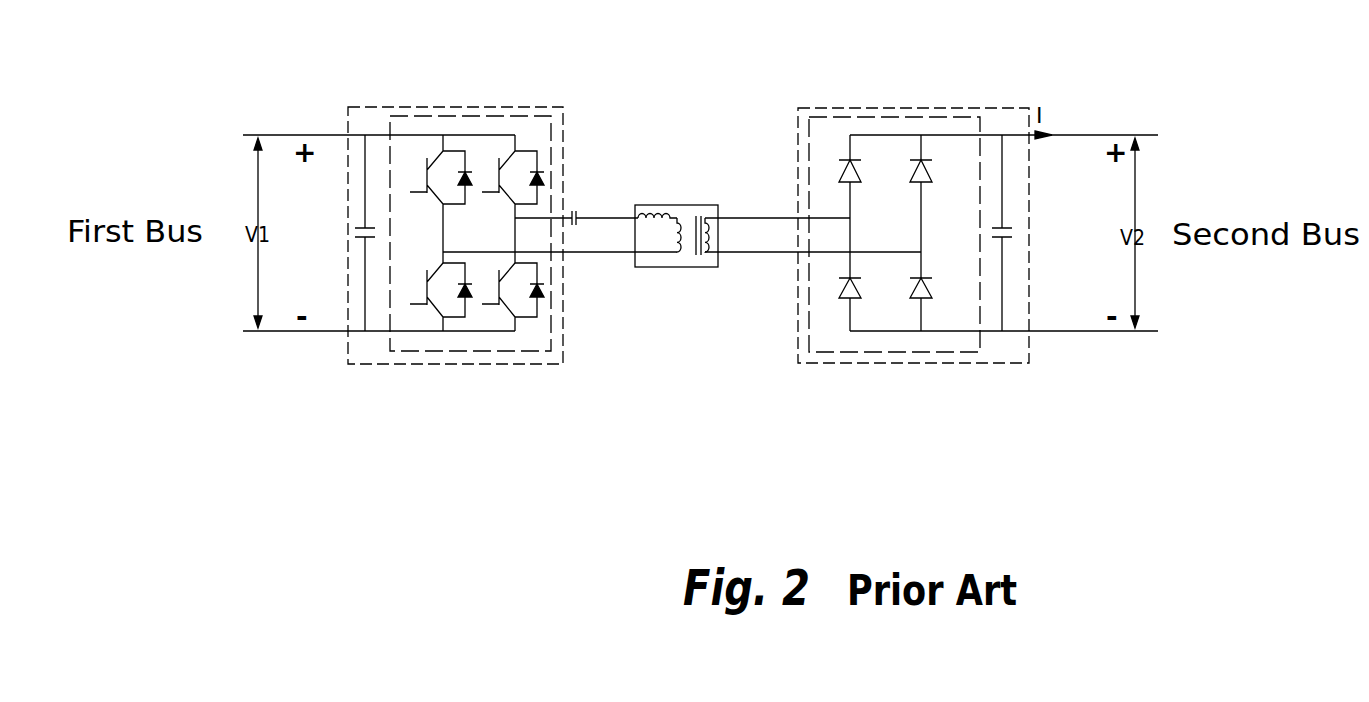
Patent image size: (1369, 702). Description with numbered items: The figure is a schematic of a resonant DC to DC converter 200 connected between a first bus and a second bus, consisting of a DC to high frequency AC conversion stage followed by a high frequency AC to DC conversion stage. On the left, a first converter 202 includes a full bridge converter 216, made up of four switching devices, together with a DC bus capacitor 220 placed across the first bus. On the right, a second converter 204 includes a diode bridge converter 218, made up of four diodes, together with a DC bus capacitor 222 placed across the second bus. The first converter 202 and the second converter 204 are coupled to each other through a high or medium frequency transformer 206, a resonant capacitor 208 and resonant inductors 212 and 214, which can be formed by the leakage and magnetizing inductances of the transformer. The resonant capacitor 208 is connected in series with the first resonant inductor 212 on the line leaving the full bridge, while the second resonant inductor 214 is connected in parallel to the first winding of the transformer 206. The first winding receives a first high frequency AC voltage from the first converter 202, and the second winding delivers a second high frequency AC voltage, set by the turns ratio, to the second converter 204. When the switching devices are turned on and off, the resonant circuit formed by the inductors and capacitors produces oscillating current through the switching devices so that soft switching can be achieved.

The DC to DC converter 200 is at (344, 66).
The first converter 202 is at (461, 94).
The second converter 204 is at (898, 92).
The transformer 206 is at (676, 205).
The resonant capacitor 208 is at (575, 202).
The first resonant inductor 212 is at (645, 213).
The second resonant inductor 214 is at (676, 250).
The full bridge converter 216 is at (478, 351).
The diode bridge converter 218 is at (898, 352).
The DC bus capacitor 220 is at (357, 228).
The DC bus capacitor 222 is at (1010, 228).